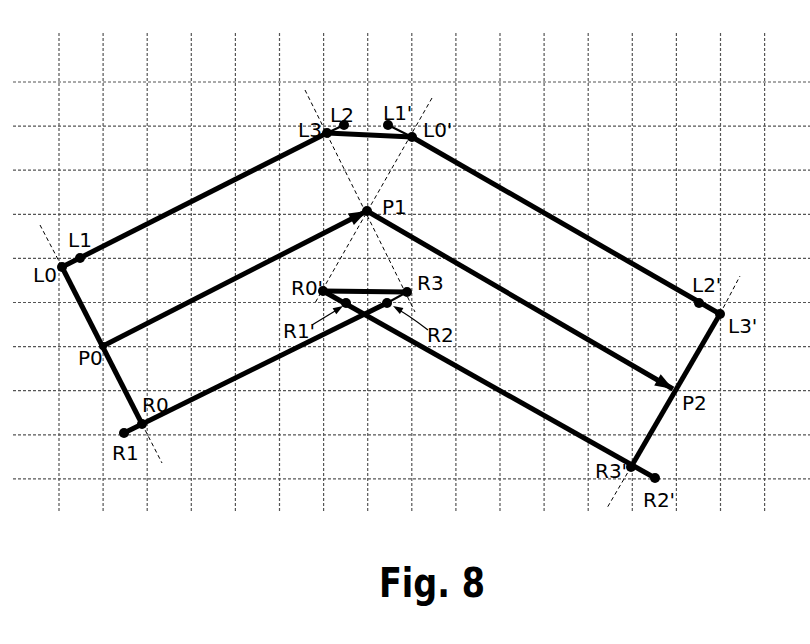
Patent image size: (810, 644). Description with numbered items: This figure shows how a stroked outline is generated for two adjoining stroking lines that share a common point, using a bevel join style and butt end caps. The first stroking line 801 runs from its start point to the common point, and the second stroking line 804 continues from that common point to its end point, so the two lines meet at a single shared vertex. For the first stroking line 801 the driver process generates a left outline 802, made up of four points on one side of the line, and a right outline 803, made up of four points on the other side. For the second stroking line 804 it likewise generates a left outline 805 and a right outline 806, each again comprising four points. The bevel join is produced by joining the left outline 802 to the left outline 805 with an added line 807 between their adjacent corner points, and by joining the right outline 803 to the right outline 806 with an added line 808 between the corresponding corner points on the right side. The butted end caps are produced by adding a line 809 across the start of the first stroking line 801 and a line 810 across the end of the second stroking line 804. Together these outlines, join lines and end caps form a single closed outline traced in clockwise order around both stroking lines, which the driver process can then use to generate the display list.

The stroking line 801 is at (265, 266).
The left outline 802 is at (133, 230).
The right outline 803 is at (272, 360).
The stroking line 804 is at (517, 291).
The left outline 805 is at (632, 260).
The right outline 806 is at (512, 402).
The line 807 is at (359, 132).
The line 808 is at (367, 298).
The line 809 is at (112, 378).
The line 810 is at (663, 424).